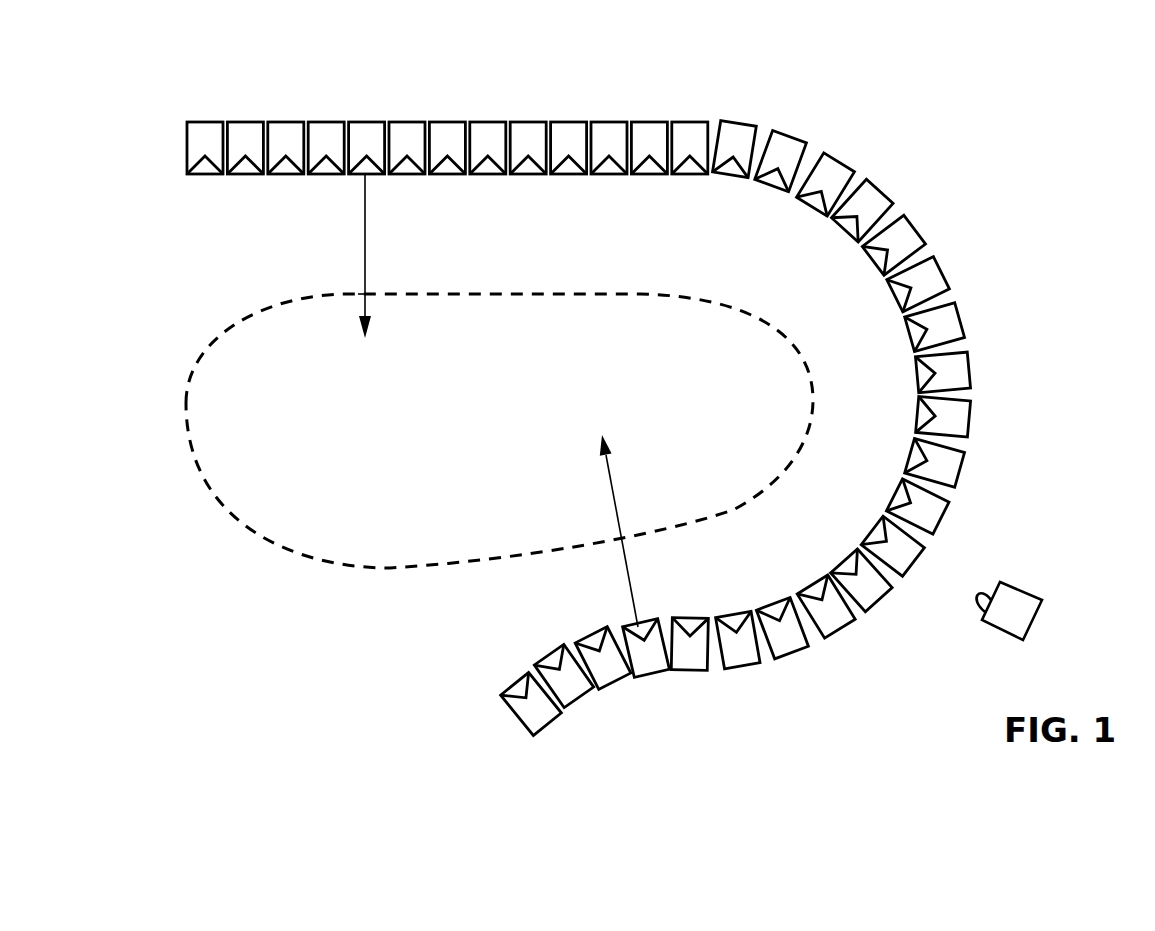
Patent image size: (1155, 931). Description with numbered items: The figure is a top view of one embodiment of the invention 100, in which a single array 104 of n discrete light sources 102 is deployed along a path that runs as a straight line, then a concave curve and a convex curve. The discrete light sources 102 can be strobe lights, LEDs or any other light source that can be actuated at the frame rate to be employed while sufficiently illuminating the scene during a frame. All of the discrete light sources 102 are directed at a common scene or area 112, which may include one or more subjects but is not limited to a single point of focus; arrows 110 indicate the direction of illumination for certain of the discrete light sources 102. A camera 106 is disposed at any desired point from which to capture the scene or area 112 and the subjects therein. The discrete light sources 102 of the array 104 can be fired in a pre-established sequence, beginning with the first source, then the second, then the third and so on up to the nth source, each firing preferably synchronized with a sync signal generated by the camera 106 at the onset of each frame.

The system 100 is at (643, 396).
The discrete light sources 102 is at (784, 122).
The array 104 is at (1000, 293).
The camera 106 is at (1023, 576).
The arrows 110 is at (376, 210).
The scene or area 112 is at (515, 280).